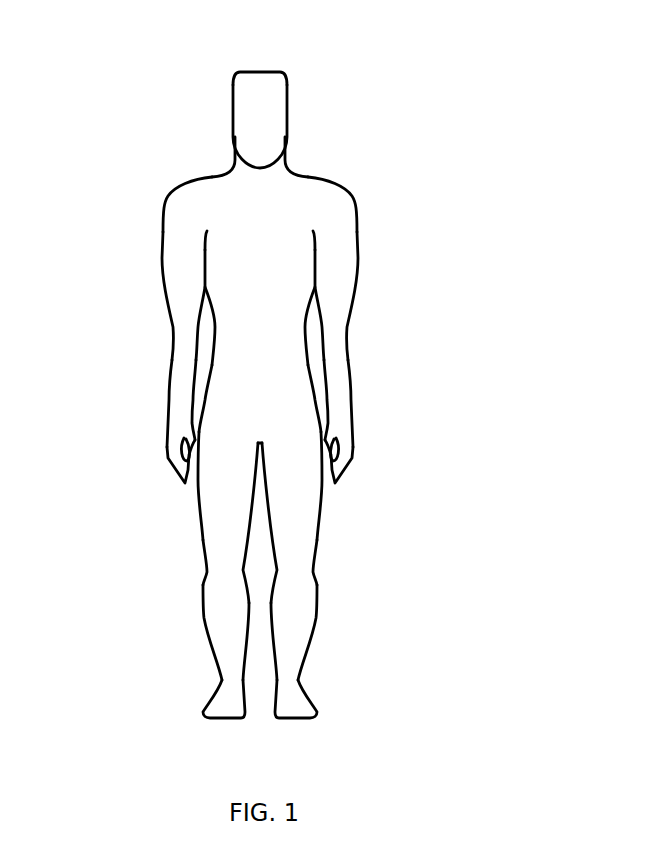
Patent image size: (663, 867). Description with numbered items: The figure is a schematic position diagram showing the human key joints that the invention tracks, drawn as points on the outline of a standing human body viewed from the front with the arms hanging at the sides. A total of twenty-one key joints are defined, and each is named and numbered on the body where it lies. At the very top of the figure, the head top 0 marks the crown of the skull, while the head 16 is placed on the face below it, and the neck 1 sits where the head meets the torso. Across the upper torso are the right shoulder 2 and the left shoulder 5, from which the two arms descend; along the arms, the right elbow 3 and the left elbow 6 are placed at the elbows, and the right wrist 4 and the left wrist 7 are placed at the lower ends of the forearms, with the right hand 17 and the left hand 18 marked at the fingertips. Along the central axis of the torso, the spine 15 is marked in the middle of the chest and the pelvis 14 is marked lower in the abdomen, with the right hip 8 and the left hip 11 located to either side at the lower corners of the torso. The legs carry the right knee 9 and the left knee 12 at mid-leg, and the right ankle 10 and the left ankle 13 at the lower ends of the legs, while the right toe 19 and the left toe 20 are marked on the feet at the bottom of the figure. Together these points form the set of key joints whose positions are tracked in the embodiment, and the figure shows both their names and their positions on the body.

The head top 0 is at (263, 70).
The head 16 is at (258, 127).
The neck 1 is at (260, 177).
The right shoulder 2 is at (182, 207).
The left shoulder 5 is at (338, 205).
The right elbow 3 is at (188, 332).
The left elbow 6 is at (338, 332).
The right wrist 4 is at (182, 413).
The left wrist 7 is at (338, 413).
The spine 15 is at (260, 332).
The pelvis 14 is at (260, 400).
The right hip 8 is at (233, 430).
The left hip 11 is at (292, 430).
The right hand 17 is at (182, 482).
The left hand 18 is at (343, 482).
The right knee 9 is at (225, 570).
The left knee 12 is at (293, 570).
The right ankle 10 is at (232, 680).
The left ankle 13 is at (288, 683).
The right toe 19 is at (205, 718).
The left toe 20 is at (310, 717).